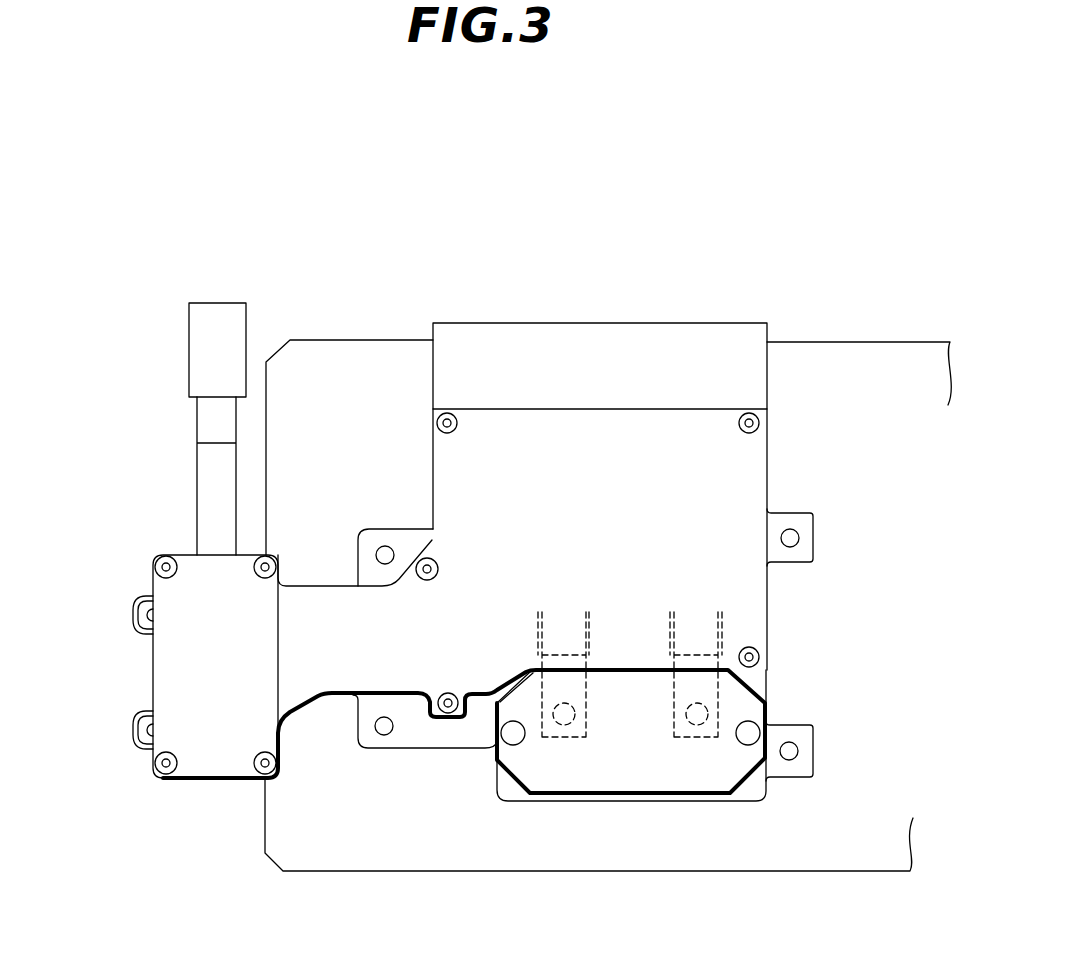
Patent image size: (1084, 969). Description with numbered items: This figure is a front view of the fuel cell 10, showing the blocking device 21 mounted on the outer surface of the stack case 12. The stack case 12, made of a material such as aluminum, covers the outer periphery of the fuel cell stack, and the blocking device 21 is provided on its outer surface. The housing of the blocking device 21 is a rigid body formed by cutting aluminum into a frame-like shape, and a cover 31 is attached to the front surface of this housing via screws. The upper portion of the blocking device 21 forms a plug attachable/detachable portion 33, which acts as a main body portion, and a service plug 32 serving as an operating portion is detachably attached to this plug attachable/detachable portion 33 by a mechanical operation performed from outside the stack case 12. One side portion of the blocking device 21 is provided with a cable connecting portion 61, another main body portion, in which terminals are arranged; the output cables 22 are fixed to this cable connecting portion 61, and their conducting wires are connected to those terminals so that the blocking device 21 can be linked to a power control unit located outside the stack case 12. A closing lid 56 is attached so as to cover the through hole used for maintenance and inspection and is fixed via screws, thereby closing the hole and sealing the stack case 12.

The fuel cell 10 is at (336, 256).
The stack case 12 is at (327, 338).
The blocking device 21 is at (340, 700).
The output cables 22 is at (198, 497).
The cover 31 is at (190, 697).
The service plug 32 is at (560, 338).
The plug attachable/detachable portion 33 is at (478, 427).
The closing lid 56 is at (627, 773).
The cable connecting portion 61 is at (153, 663).